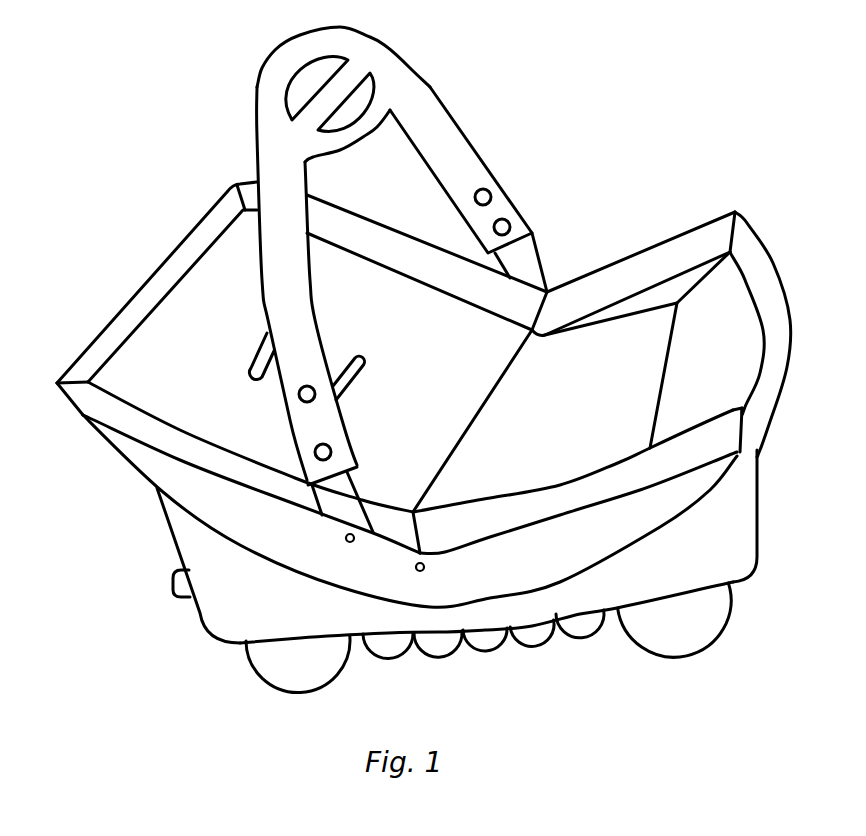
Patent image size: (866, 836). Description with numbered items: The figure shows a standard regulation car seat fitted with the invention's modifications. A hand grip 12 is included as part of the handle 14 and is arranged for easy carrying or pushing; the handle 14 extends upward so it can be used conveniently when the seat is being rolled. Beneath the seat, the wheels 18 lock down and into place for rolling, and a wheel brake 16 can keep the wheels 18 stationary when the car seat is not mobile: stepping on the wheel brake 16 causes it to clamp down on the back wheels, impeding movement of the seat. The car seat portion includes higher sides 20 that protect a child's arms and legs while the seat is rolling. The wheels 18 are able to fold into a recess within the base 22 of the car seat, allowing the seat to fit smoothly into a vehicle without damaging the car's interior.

The hand grip 12 is at (373, 57).
The handle 14 is at (440, 137).
The wheel brake 16 is at (173, 580).
The wheels 18 is at (693, 620).
The higher sides 20 is at (697, 482).
The base 22 is at (703, 535).